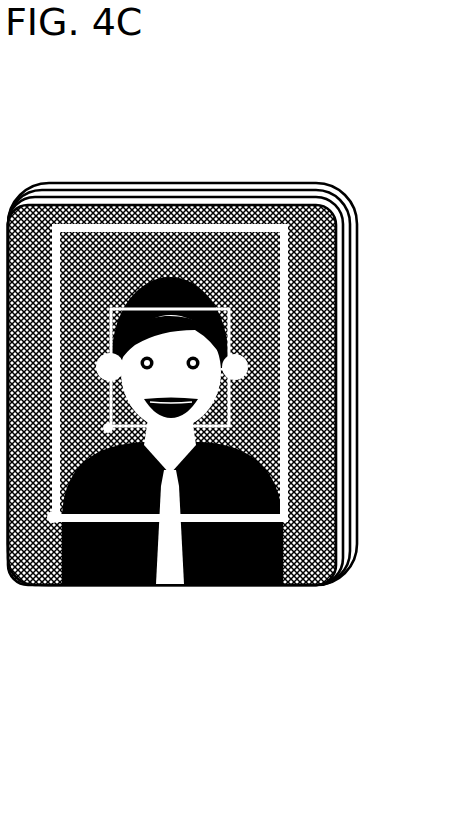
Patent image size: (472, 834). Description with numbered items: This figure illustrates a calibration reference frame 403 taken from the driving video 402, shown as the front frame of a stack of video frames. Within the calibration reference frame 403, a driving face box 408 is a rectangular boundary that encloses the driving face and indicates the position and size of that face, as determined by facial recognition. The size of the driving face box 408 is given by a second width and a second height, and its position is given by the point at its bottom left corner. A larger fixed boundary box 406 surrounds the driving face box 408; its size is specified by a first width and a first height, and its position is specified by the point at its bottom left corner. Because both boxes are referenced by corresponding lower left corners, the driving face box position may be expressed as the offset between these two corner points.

The driving video 402 is at (192, 423).
The calibration reference frame 403 is at (315, 558).
The fixed boundary box 406 is at (143, 522).
The driving face box 408 is at (137, 306).